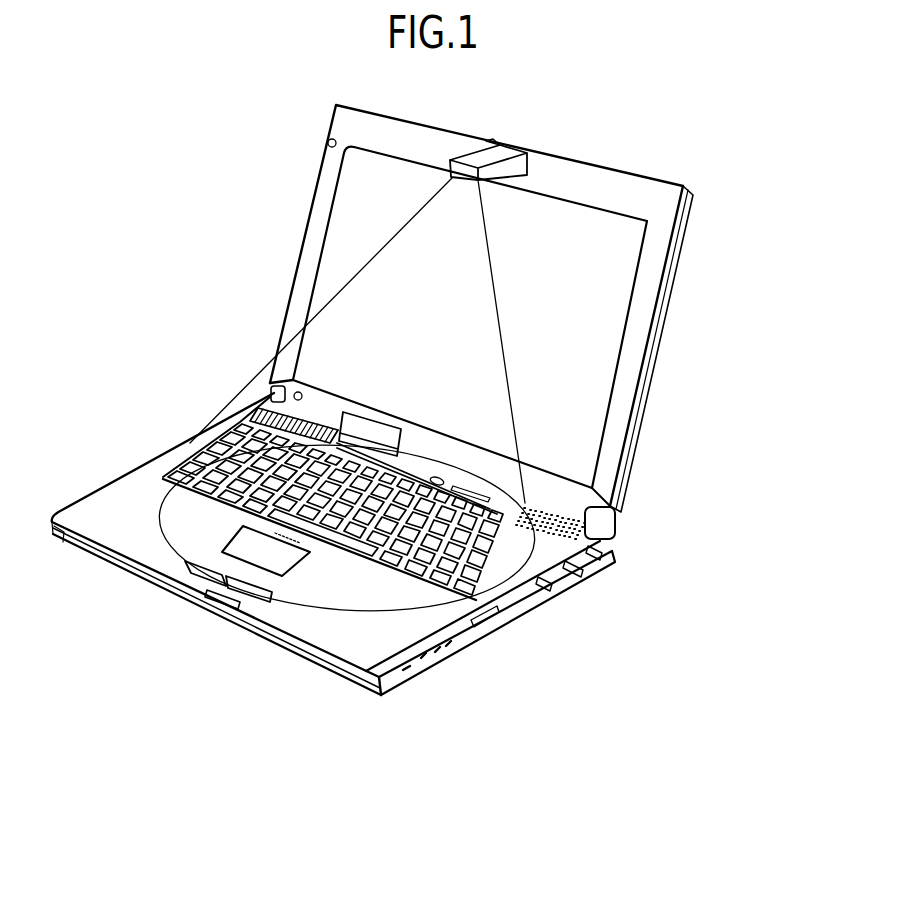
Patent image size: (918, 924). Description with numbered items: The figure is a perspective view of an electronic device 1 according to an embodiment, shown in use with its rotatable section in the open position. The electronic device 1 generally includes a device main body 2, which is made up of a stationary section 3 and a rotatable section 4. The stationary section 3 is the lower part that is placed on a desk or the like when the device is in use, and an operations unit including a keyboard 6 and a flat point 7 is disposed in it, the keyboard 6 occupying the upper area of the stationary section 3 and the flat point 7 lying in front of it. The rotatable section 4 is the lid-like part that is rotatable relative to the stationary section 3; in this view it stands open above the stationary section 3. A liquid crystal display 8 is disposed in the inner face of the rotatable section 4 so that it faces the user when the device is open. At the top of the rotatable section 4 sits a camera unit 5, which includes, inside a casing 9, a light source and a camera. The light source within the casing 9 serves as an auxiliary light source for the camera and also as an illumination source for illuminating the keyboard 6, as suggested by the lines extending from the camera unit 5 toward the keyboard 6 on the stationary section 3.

The electronic device 1 is at (645, 151).
The device main body 2 is at (216, 608).
The stationary section 3 is at (404, 663).
The rotatable section 4 is at (670, 344).
The camera unit 5 is at (514, 140).
The keyboard 6 is at (526, 546).
The flat point 7 is at (245, 550).
The liquid crystal display 8 is at (587, 378).
The casing 9 is at (473, 157).